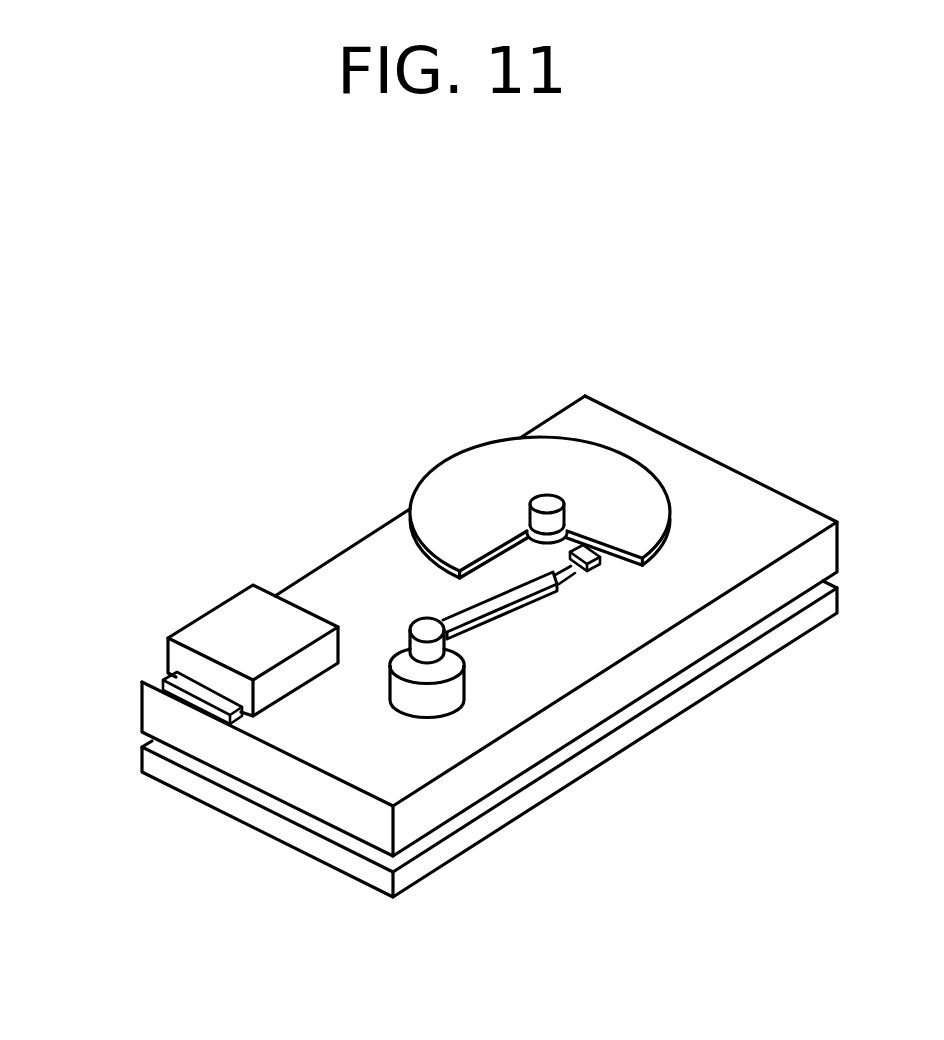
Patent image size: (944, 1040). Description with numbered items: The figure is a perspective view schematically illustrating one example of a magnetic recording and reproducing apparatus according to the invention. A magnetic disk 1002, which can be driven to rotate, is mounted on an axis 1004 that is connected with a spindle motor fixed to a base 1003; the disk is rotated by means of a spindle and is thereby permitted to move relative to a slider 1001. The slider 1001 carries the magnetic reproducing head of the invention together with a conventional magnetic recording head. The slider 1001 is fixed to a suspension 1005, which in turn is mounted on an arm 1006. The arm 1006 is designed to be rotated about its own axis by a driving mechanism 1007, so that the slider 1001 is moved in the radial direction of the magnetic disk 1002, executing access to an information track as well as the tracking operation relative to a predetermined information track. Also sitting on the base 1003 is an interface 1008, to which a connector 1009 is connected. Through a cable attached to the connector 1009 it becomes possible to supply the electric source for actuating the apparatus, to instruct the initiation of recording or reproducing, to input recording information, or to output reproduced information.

The slider 1001 is at (598, 565).
The magnetic disk 1002 is at (595, 442).
The base 1003 is at (667, 605).
The axis 1004 is at (553, 435).
The suspension 1005 is at (566, 577).
The arm 1006 is at (472, 618).
The driving mechanism 1007 is at (442, 700).
The interface 1008 is at (250, 630).
The connector 1009 is at (177, 693).